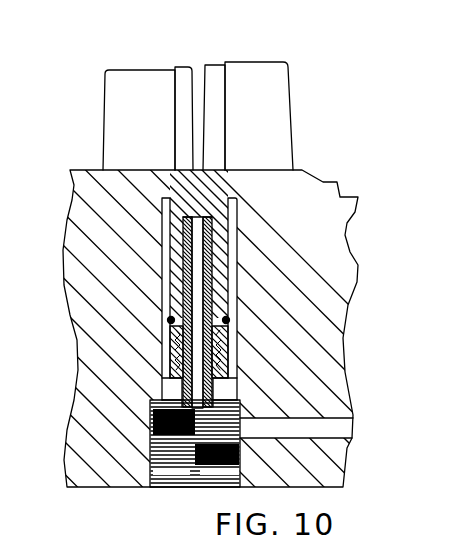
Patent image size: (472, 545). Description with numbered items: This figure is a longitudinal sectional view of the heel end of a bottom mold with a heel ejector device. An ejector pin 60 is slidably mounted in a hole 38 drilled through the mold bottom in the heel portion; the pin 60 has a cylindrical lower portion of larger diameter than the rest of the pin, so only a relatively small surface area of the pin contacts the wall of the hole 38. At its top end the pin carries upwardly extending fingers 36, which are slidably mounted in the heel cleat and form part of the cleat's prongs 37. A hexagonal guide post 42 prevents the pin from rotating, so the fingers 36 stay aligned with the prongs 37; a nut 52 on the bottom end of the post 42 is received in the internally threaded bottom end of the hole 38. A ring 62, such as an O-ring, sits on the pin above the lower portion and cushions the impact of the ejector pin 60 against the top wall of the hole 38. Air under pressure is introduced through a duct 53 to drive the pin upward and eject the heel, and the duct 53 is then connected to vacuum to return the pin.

The fingers 36 is at (215, 65).
The prongs 37 is at (105, 112).
The hole 38 is at (162, 278).
The guide post 42 is at (178, 393).
The nut 52 is at (173, 467).
The duct 53 is at (350, 434).
The ejector pin 60 is at (178, 237).
The ring 62 is at (229, 322).